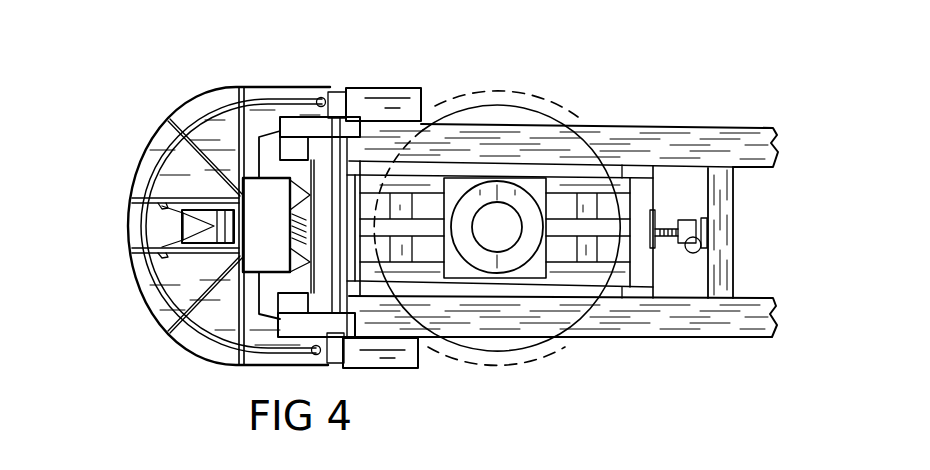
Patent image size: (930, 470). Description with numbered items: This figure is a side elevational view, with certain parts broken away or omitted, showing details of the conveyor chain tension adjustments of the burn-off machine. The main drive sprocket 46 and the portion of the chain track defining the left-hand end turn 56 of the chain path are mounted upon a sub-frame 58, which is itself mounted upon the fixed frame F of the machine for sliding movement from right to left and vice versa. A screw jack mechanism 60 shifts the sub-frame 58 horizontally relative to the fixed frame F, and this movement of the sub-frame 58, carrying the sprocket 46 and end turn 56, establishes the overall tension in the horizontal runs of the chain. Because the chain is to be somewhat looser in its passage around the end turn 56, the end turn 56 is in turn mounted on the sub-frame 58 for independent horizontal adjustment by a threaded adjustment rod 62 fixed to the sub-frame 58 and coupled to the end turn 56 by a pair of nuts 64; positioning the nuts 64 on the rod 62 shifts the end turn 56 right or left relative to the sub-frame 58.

The main drive sprocket 46 is at (503, 122).
The left-hand end turn 56 is at (193, 350).
The sub-frame 58 is at (572, 197).
The screw jack mechanism 60 is at (688, 222).
The threaded adjustment rod 62 is at (167, 252).
The nuts 64 is at (158, 205).
The fixed frame F is at (647, 325).